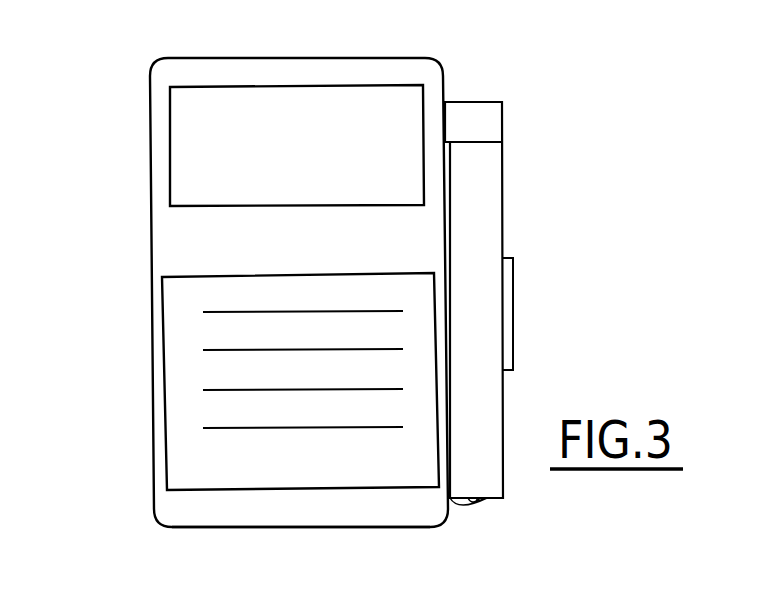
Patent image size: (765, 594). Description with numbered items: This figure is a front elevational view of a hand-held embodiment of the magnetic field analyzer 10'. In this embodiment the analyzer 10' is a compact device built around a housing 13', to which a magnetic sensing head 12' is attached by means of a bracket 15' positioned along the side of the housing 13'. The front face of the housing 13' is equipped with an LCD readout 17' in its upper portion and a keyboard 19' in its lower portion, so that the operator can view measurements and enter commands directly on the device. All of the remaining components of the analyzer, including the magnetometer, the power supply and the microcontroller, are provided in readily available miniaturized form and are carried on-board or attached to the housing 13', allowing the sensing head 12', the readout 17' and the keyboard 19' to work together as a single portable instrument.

The analyzer 10' is at (341, 264).
The magnetic sensing head 12' is at (522, 303).
The housing 13' is at (321, 536).
The bracket 15' is at (557, 314).
The LCD readout 17' is at (240, 145).
The keyboard 19' is at (243, 381).